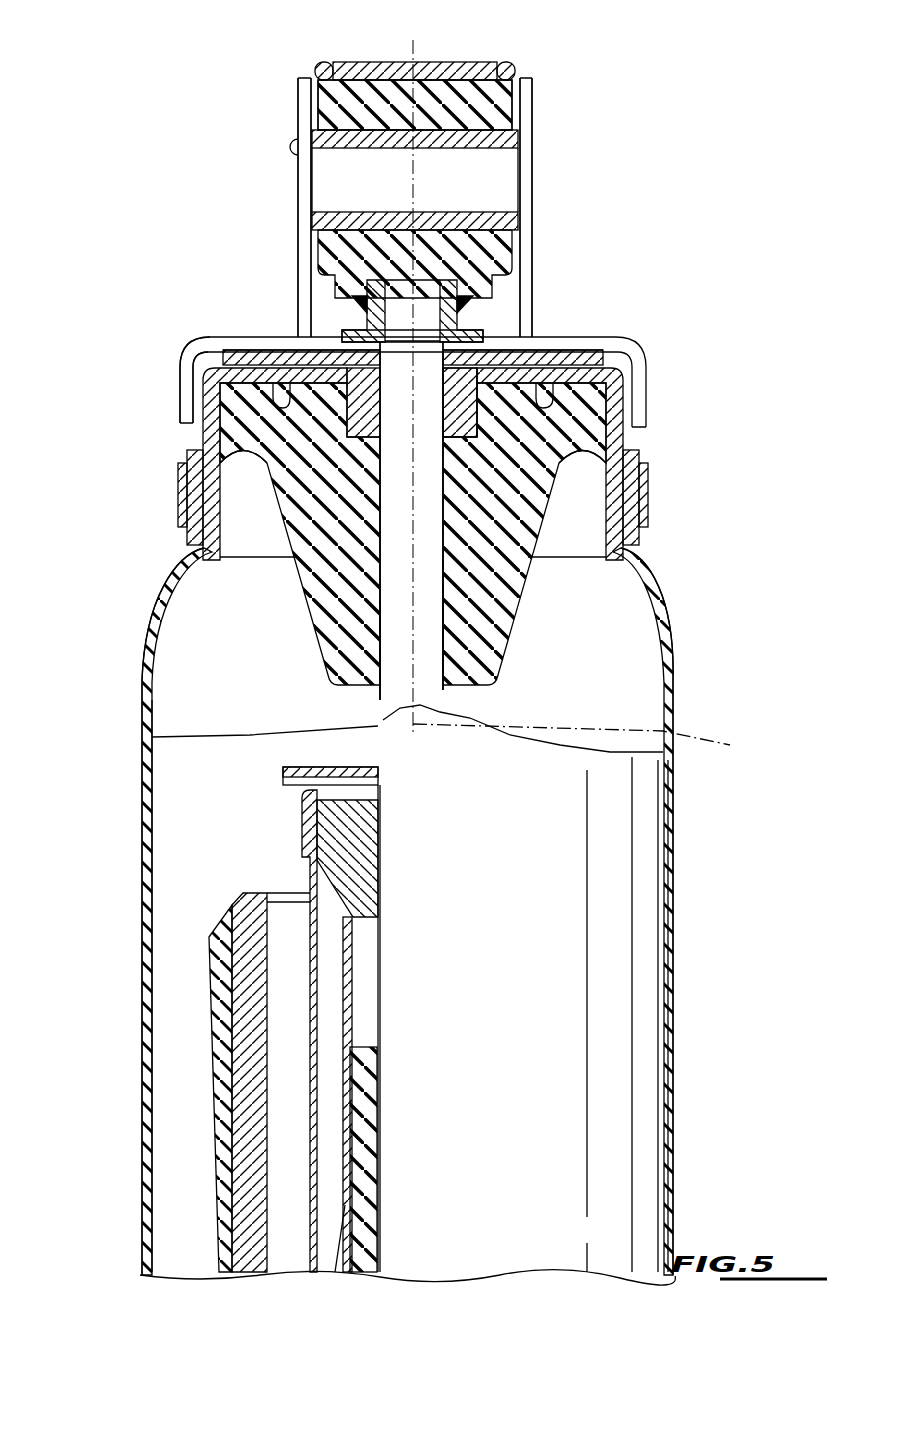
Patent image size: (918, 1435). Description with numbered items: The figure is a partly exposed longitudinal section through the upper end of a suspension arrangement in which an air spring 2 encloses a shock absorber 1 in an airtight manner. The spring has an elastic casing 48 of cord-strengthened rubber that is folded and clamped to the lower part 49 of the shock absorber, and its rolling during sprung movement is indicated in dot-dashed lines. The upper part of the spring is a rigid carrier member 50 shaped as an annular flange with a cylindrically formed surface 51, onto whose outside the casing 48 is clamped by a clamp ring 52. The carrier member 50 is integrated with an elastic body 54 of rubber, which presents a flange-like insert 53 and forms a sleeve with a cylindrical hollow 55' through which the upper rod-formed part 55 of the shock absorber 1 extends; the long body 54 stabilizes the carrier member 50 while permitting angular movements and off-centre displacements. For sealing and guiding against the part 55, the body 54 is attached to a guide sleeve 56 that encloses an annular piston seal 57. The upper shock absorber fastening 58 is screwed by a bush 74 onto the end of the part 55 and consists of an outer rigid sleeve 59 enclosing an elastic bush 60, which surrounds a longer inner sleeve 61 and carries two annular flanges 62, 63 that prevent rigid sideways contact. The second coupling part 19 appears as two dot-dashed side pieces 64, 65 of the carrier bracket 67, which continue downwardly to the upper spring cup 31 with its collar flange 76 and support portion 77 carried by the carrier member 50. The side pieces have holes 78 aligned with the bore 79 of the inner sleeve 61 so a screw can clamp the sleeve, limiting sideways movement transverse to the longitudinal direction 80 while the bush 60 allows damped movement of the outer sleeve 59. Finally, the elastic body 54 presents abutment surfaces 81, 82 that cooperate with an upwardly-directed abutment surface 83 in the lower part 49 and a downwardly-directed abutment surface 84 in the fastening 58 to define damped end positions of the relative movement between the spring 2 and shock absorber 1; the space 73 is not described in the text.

The shock absorber 1 is at (379, 698).
The spring 2 is at (142, 967).
The second coupling part 19 is at (293, 94).
The upper spring cup 31 is at (183, 376).
The elastic casing 48 is at (147, 908).
The lower part of the shock absorber 49 is at (230, 1158).
The carrier member 50 is at (213, 423).
The cylindrically formed surface 51 is at (190, 448).
The clamp ring 52 is at (180, 490).
The flange-like insert 53 is at (252, 357).
The elastic body 54 is at (327, 590).
The upper rod-formed part of the shock absorber 55 is at (217, 684).
The cylindrical hollow 55' is at (594, 625).
The guide sleeve 56 is at (357, 467).
The annular piston seal 57 is at (477, 398).
The upper shock absorber fastening 58 is at (438, 63).
The outer rigid sleeve 59 is at (383, 62).
The elastic bush 60 is at (493, 112).
The inner sleeve 61 is at (510, 137).
The annular flange 62 is at (326, 62).
The annular flange 63 is at (507, 64).
The side piece 64 is at (303, 245).
The side piece 65 is at (523, 257).
The carrier bracket 67 is at (297, 124).
The interior space 73 is at (181, 831).
The bush 74 is at (355, 326).
The collar flange 76 is at (177, 386).
The support portion 77 is at (257, 338).
The holes 78 is at (293, 158).
The bore 79 is at (328, 162).
The longitudinal direction 80 is at (587, 739).
The abutment surface 81 is at (442, 688).
The abutment surface 82 is at (345, 345).
The upwardly-directed abutment surface 83 is at (320, 767).
The downwardly-directed abutment surface 84 is at (468, 366).